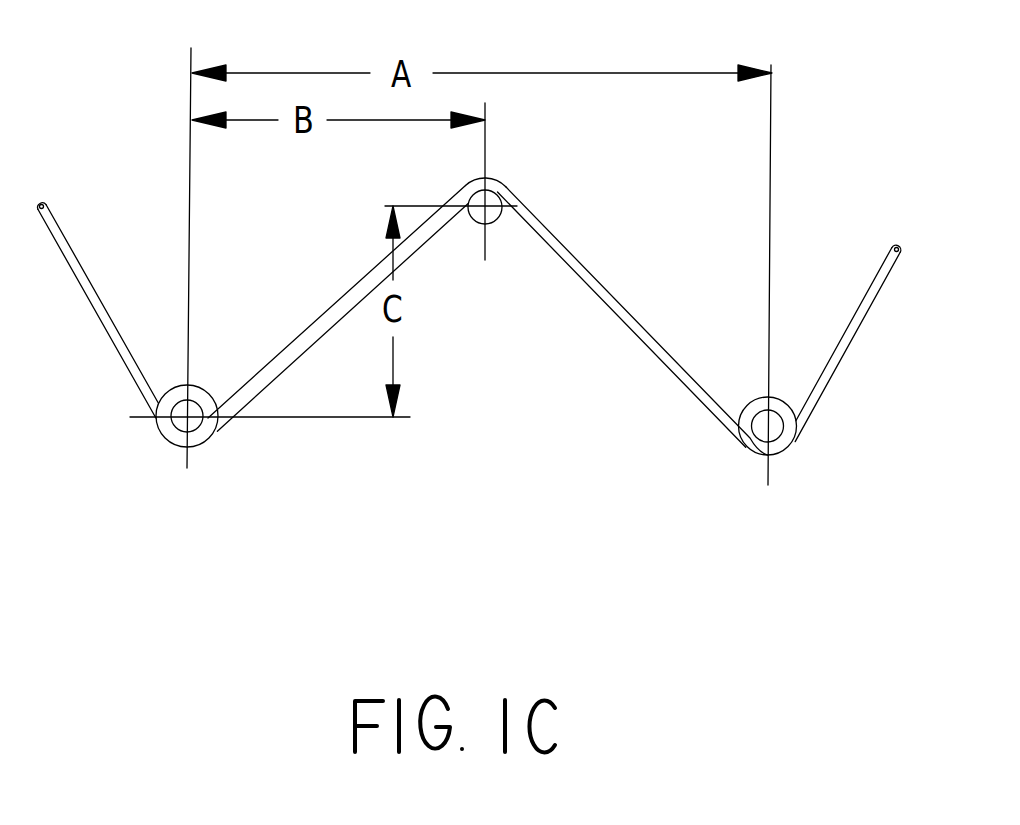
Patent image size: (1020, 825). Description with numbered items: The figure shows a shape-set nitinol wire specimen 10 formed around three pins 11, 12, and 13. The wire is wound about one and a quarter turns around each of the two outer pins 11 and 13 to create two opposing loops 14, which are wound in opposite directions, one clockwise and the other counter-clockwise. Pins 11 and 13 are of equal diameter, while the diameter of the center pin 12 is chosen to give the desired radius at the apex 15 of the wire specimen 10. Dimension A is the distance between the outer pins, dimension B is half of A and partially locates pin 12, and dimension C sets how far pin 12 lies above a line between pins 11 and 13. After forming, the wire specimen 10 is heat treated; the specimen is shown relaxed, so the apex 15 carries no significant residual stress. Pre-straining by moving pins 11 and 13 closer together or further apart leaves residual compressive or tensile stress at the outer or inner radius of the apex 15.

The wire specimen 10 is at (630, 366).
The pin 11 is at (207, 391).
The pin 12 is at (498, 221).
The pin 13 is at (747, 414).
The loops 14 is at (196, 446).
The apex 15 is at (493, 182).